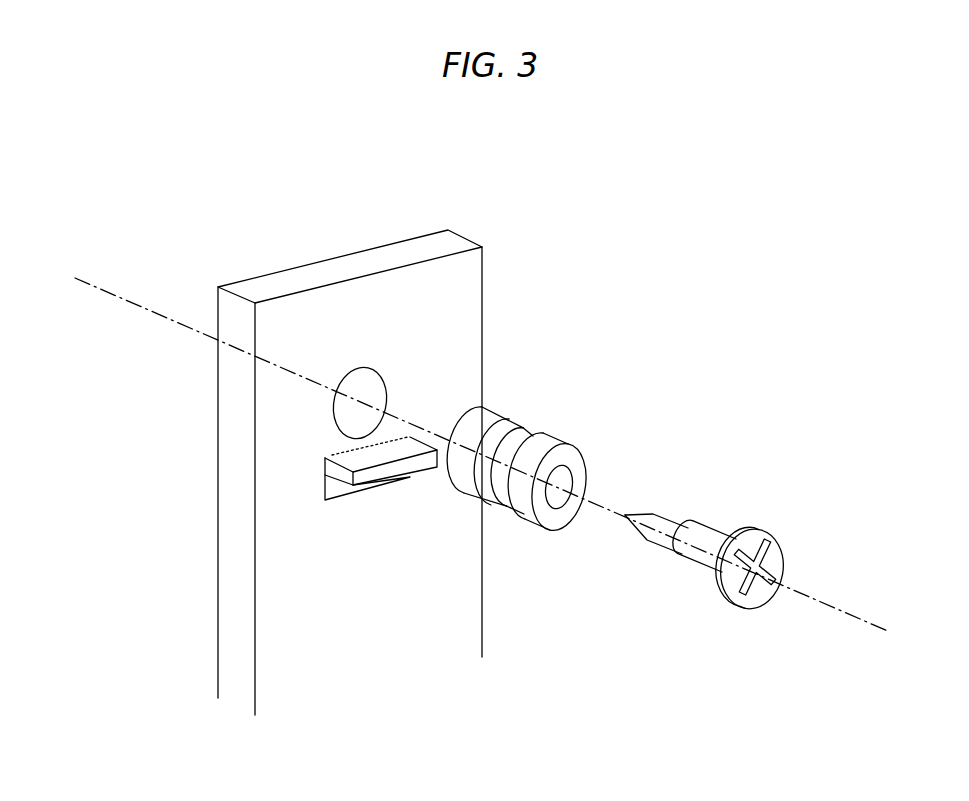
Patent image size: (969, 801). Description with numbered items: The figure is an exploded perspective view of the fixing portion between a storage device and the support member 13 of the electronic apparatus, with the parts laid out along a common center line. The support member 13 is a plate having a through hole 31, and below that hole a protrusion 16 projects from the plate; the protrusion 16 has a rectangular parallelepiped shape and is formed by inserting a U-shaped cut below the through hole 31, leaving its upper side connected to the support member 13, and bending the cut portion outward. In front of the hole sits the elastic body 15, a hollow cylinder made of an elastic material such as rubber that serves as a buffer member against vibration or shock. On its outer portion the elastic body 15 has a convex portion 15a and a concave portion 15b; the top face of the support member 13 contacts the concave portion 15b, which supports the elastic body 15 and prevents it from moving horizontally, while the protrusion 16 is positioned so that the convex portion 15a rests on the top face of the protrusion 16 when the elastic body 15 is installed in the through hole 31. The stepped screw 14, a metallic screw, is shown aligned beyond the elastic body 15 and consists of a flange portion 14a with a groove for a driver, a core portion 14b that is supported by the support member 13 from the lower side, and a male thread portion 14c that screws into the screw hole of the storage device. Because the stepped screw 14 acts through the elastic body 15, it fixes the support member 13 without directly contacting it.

The support member 13 is at (362, 265).
The through hole 31 is at (382, 371).
The protrusion 16 is at (422, 472).
The elastic body 15 is at (546, 484).
The convex portion 15a is at (492, 413).
The concave portion 15b is at (535, 438).
The stepped screw 14 is at (715, 543).
The flange portion 14a is at (773, 533).
The core portion 14b is at (717, 530).
The male thread portion 14c is at (672, 515).